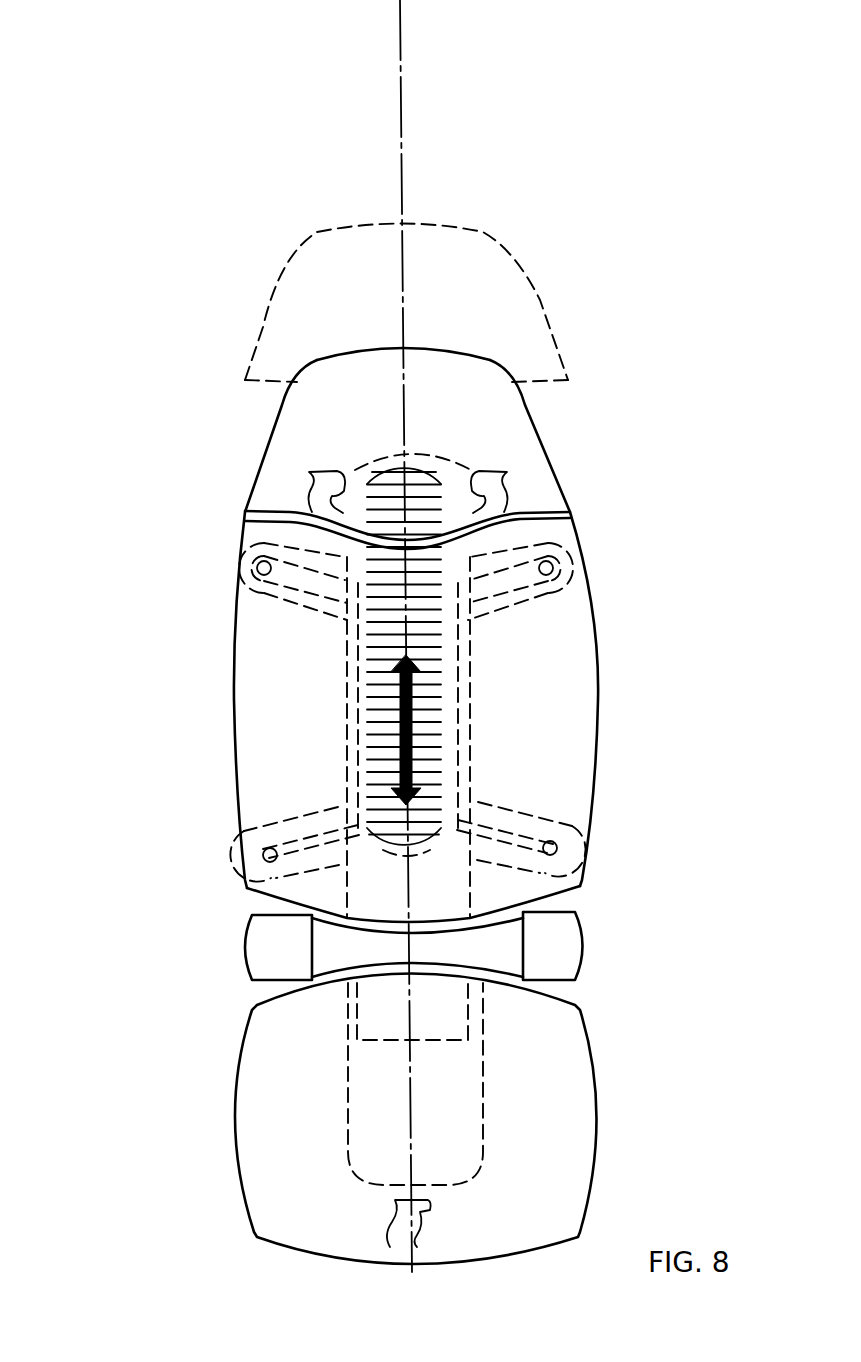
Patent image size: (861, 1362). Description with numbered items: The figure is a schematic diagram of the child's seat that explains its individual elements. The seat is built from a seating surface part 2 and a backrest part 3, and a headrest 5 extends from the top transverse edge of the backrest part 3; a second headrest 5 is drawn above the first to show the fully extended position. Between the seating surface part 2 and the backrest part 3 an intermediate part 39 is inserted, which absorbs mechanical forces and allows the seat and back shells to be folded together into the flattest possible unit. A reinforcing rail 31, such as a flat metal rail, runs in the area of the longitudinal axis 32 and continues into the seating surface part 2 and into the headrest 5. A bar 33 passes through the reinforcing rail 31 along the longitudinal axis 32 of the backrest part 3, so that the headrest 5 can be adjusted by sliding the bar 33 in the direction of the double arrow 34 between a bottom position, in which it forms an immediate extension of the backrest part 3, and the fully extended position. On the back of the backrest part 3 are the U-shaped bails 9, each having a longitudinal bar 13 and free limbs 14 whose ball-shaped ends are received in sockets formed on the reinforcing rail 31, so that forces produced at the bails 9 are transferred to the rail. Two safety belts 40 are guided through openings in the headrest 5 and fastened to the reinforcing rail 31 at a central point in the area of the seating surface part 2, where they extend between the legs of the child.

The seating surface part 2 is at (288, 1132).
The backrest part 3 is at (263, 815).
The headrest 5 is at (300, 313).
The U-shaped bail 9 is at (338, 771).
The longitudinal bar 13 is at (345, 640).
The free limbs 14 is at (268, 568).
The reinforcing rail 31 is at (452, 903).
The longitudinal axis 32 is at (403, 302).
The bar 33 is at (564, 628).
The double arrow 34 is at (392, 697).
The intermediate part 39 is at (273, 947).
The safety belts 40 is at (325, 483).